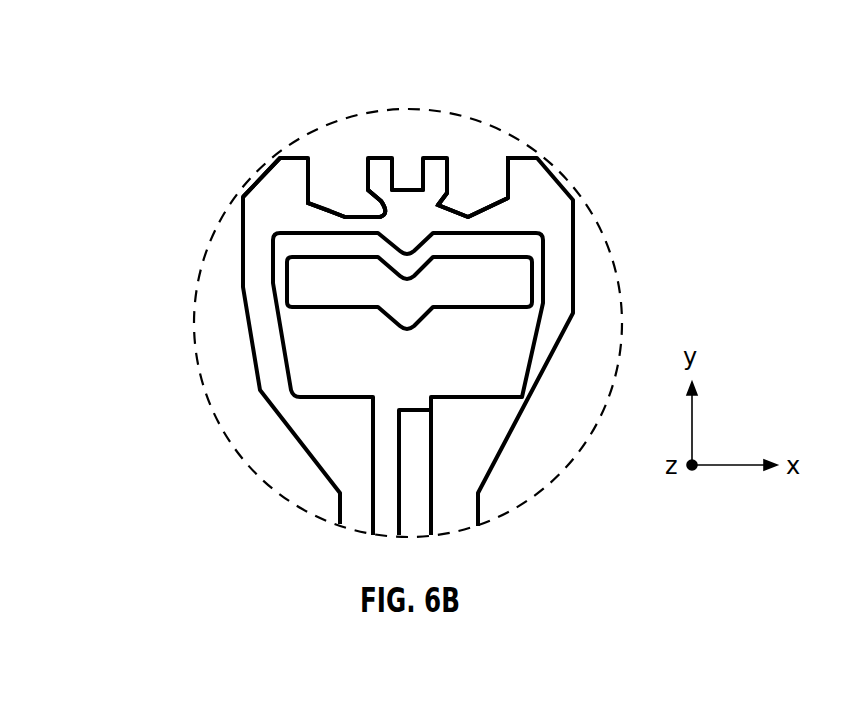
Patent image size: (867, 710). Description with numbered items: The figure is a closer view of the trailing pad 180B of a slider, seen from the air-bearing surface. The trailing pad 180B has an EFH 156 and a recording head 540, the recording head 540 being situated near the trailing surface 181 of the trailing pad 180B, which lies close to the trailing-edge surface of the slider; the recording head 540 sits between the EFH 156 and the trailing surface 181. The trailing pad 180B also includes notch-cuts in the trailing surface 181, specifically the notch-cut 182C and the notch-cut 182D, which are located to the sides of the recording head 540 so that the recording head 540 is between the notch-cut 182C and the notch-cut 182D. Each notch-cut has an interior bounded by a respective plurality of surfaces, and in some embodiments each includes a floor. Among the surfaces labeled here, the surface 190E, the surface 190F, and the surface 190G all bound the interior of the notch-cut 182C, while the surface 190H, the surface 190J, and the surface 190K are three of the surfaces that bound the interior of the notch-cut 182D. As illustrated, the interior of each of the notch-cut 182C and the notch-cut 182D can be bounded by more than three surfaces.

The trailing pad 180B is at (171, 166).
The trailing surface 181 is at (295, 152).
The notch-cut 182C is at (325, 188).
The notch-cut 182D is at (492, 185).
The EFH 156 is at (306, 276).
The surface 190E is at (323, 187).
The surface 190F is at (343, 212).
The surface 190G is at (365, 166).
The surface 190H is at (452, 207).
The surface 190J is at (466, 212).
The surface 190K is at (500, 165).
The recording head 540 is at (410, 153).